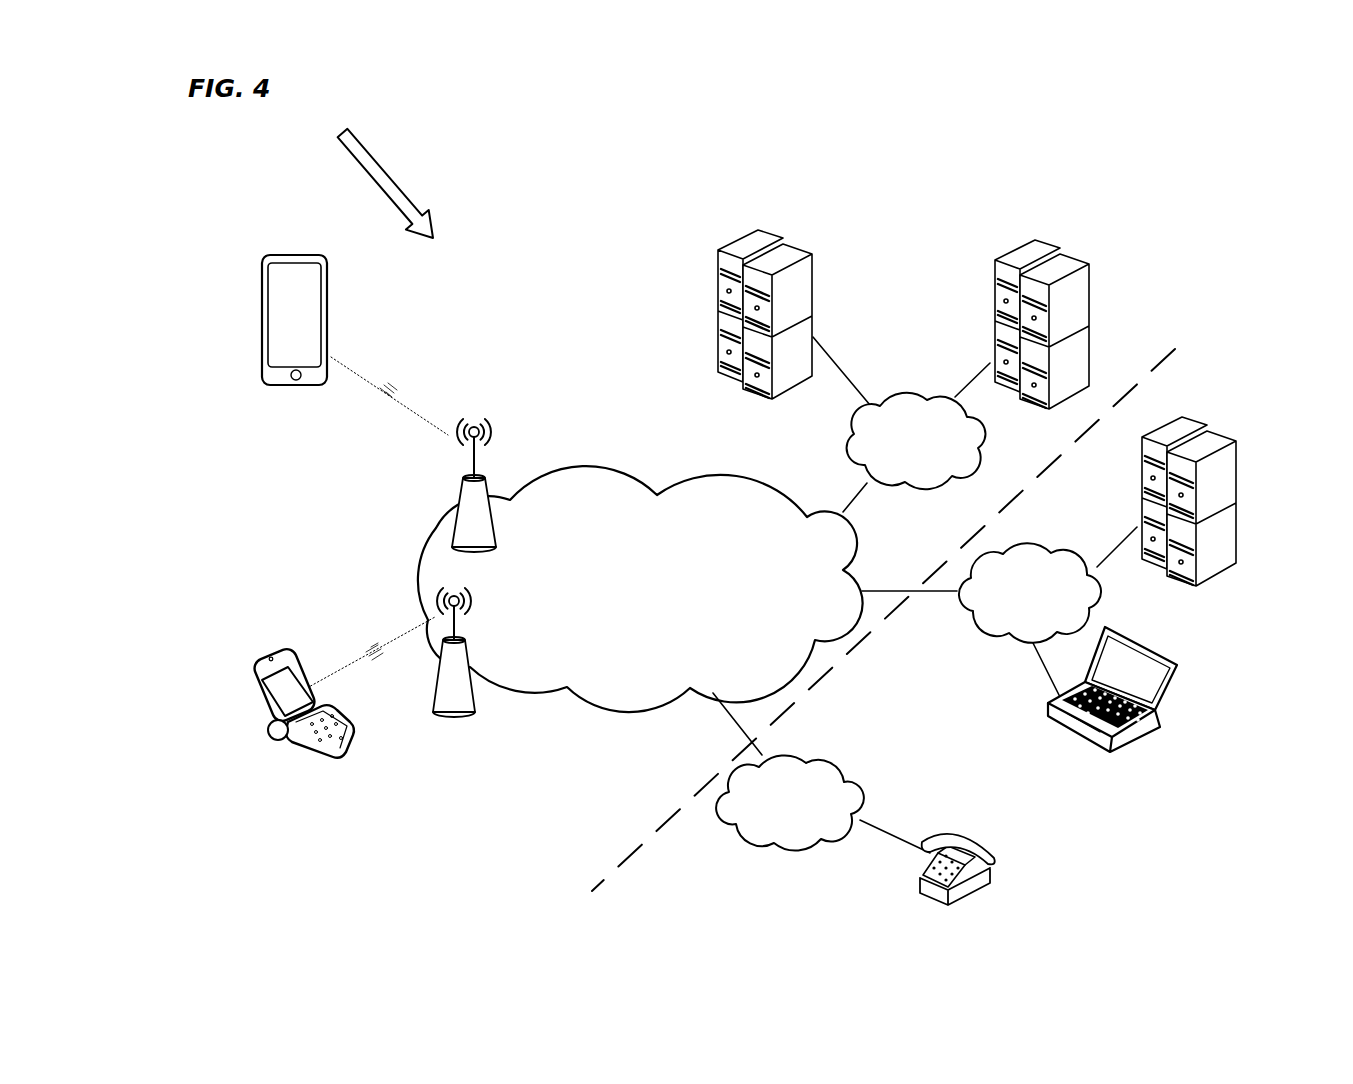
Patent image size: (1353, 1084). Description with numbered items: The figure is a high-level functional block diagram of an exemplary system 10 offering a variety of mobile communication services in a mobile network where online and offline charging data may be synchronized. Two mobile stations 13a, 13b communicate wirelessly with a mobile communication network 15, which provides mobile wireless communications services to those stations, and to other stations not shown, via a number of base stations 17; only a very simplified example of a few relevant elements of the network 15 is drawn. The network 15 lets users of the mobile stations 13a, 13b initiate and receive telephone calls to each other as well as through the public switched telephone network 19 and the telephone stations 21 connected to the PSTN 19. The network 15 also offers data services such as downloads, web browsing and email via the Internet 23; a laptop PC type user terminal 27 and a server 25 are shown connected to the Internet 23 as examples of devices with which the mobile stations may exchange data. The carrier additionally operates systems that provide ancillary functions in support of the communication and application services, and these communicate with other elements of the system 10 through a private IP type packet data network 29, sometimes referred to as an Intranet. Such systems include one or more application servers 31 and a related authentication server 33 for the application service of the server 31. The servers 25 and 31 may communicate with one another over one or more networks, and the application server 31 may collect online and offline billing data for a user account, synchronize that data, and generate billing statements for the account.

The system 10 is at (375, 176).
The mobile station 13a is at (247, 680).
The mobile station 13b is at (262, 299).
The mobile communication network 15 is at (545, 478).
The base station 17 is at (462, 500).
The public switched telephone network 19 is at (863, 788).
The telephone station 21 is at (920, 888).
The Internet 23 is at (990, 632).
The server 25 is at (1137, 507).
The laptop PC type user terminal 27 is at (1077, 738).
The private IP type packet data network 29 is at (990, 453).
The application server 31 is at (813, 270).
The authentication server 33 is at (1088, 322).